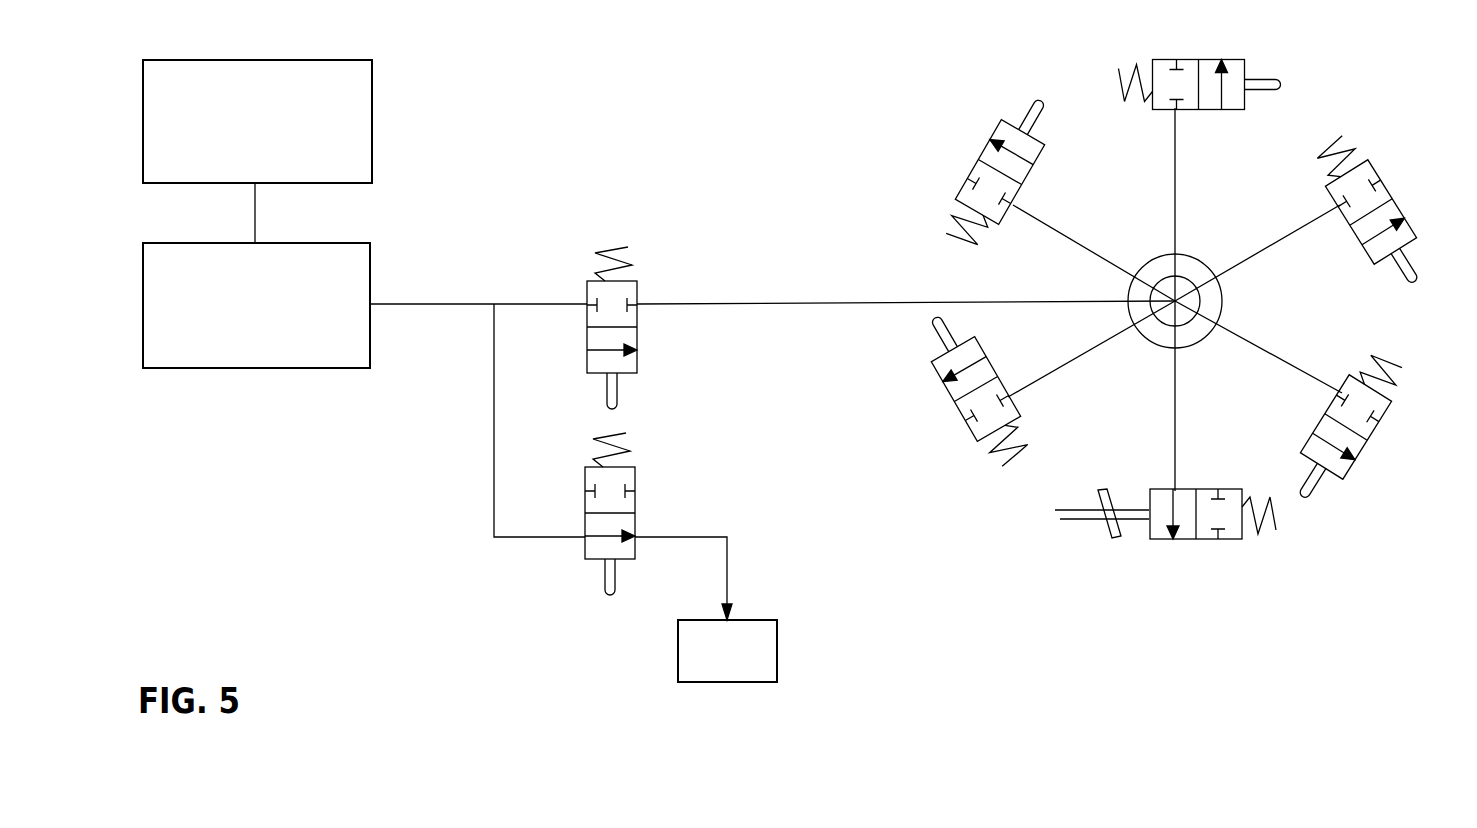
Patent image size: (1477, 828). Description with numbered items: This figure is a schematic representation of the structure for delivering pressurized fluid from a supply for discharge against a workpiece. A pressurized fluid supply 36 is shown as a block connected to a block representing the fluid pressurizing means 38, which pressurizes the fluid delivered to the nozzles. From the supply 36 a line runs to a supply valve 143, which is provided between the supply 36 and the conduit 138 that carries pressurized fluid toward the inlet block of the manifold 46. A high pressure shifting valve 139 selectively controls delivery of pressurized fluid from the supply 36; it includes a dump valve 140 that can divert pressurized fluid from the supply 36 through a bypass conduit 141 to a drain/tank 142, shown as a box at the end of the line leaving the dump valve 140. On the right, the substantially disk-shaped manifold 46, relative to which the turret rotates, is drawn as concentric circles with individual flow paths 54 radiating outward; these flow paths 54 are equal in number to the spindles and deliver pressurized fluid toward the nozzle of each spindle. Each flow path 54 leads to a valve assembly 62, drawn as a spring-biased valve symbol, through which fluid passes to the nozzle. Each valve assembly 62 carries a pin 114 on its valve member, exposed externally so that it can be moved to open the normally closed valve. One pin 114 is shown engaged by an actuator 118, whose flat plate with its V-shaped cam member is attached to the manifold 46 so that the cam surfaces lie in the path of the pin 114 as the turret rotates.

The fluid supply 36 is at (273, 352).
The fluid pressurizing means 38 is at (272, 167).
The manifold 46 is at (1207, 258).
The flow paths 54 is at (1148, 290).
The valve assembly 62 is at (1181, 50).
The pin 114 is at (1268, 75).
The actuator 118 is at (1108, 490).
The conduit 138 is at (742, 304).
The high pressure shifting valve 139 is at (692, 396).
The dump valve 140 is at (636, 505).
The bypass conduit 141 is at (492, 456).
The drain/tank 142 is at (742, 658).
The supply valve 143 is at (637, 296).